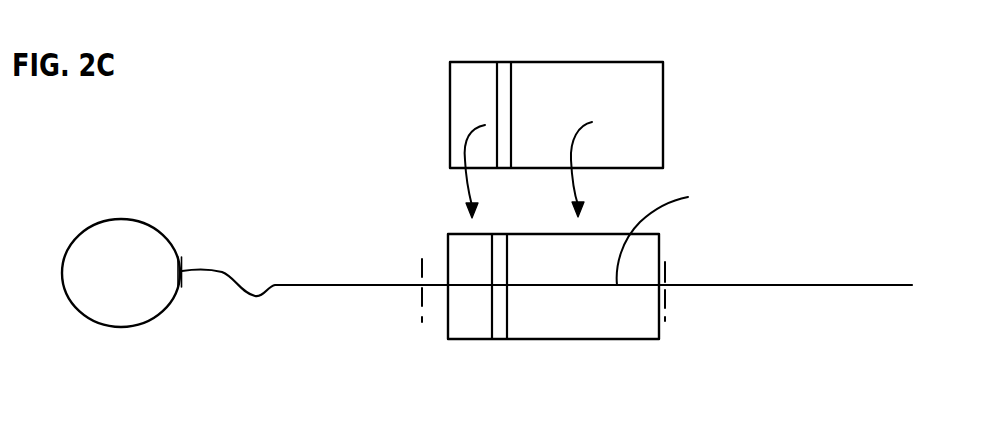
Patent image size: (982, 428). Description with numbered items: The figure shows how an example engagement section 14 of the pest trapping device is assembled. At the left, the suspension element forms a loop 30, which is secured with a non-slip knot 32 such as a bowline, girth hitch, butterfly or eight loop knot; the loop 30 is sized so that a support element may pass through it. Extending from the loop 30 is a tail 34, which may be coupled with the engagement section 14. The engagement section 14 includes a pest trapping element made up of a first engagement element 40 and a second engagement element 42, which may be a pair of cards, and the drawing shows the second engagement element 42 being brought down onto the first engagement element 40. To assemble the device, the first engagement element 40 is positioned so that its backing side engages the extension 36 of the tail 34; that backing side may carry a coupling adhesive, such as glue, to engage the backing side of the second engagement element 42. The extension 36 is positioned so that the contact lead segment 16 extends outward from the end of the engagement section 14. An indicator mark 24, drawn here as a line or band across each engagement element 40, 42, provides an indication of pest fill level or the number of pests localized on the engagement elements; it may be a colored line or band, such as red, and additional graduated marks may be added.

The engagement section 14 is at (434, 283).
The contact lead segment 16 is at (840, 286).
The indicator mark 24 is at (505, 61).
The loop 30 is at (66, 248).
The non-slip knot 32 is at (180, 290).
The tail 34 is at (305, 286).
The extension 36 is at (669, 236).
The first engagement element 40 is at (567, 340).
The second engagement element 42 is at (450, 106).